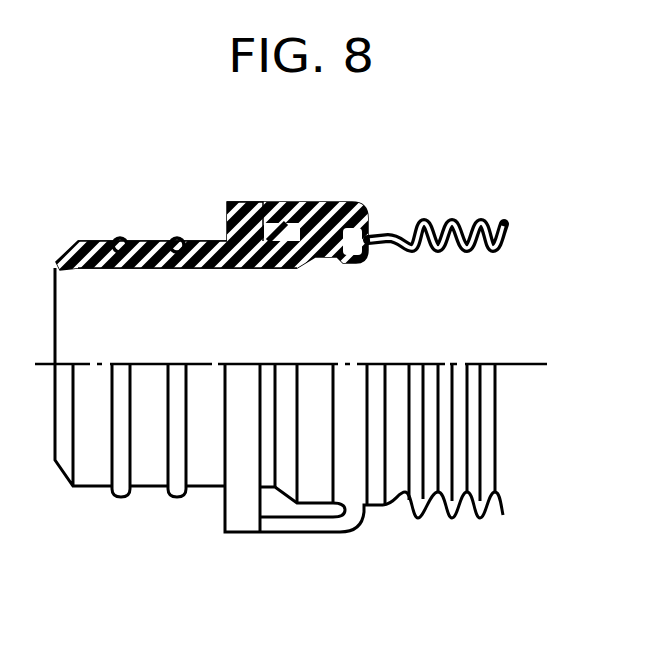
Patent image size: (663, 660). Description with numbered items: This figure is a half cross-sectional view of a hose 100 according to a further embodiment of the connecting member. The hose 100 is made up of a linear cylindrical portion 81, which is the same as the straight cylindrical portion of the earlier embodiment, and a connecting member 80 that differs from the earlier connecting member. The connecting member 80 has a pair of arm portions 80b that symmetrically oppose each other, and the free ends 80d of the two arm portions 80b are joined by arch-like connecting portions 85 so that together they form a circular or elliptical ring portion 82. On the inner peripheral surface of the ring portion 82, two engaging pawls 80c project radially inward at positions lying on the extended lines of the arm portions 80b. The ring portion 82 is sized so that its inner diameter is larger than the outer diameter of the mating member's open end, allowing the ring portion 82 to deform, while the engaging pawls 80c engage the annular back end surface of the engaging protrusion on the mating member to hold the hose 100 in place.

The hose 100 is at (435, 168).
The connecting member 80 is at (300, 198).
The arm portion 80b is at (289, 522).
The engaging pawl 80c is at (233, 268).
The free end 80d is at (247, 203).
The linear cylindrical portion 81 is at (203, 243).
The ring portion 82 is at (214, 427).
The connecting portion 85 is at (238, 483).